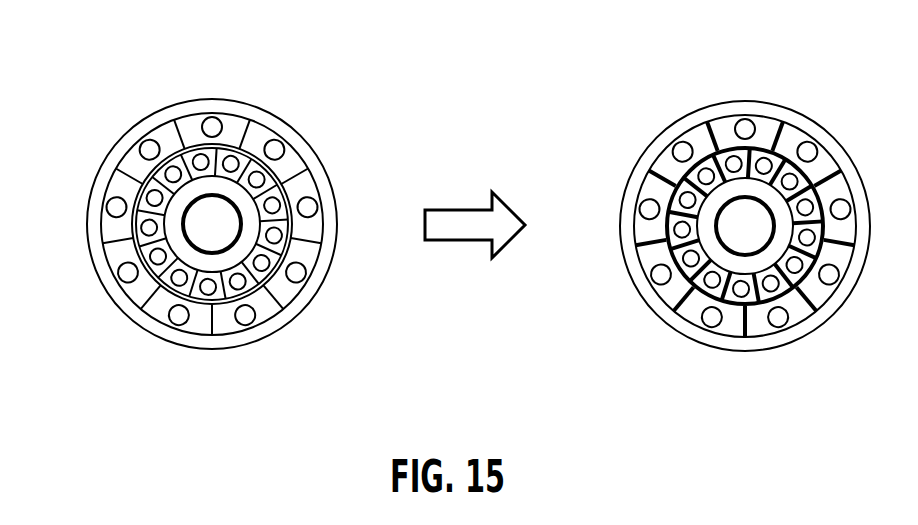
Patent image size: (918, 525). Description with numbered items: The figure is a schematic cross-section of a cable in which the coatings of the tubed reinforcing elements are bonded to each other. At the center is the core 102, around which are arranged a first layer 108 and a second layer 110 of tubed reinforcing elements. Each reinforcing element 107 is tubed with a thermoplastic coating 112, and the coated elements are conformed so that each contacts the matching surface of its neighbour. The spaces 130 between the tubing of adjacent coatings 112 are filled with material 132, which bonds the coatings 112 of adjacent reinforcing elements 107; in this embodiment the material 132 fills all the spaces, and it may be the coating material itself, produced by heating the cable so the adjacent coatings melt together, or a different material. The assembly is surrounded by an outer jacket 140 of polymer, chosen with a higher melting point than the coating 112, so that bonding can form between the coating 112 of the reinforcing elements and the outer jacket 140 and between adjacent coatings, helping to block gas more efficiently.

The core 102 is at (222, 240).
The reinforcing element 107 is at (210, 127).
The coating 112 is at (130, 167).
The spaces 130 is at (240, 142).
The outer jacket 140 is at (670, 132).
The second layer of tubed reinforcing elements 110 is at (797, 128).
The first layer of tubed reinforcing elements 108 is at (695, 288).
The material 132 is at (807, 292).